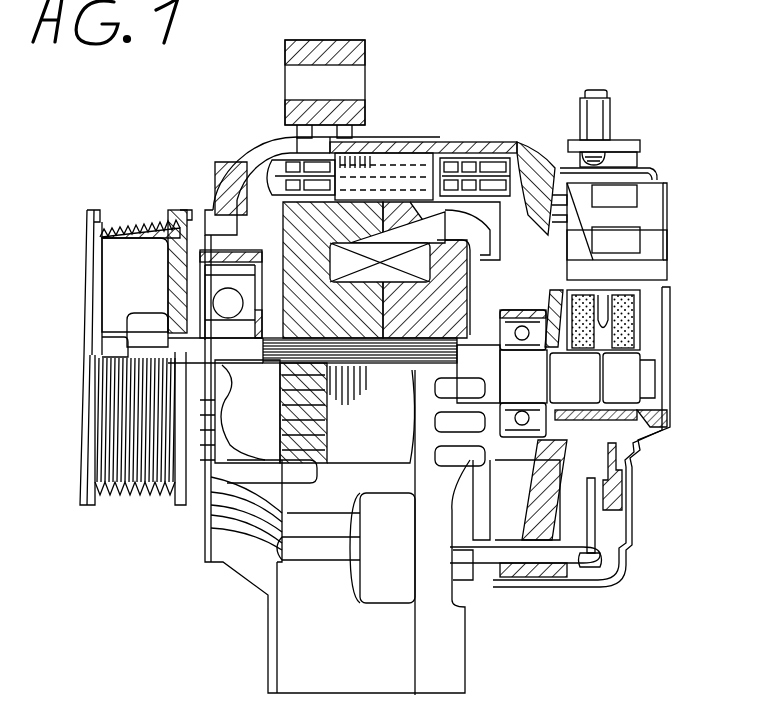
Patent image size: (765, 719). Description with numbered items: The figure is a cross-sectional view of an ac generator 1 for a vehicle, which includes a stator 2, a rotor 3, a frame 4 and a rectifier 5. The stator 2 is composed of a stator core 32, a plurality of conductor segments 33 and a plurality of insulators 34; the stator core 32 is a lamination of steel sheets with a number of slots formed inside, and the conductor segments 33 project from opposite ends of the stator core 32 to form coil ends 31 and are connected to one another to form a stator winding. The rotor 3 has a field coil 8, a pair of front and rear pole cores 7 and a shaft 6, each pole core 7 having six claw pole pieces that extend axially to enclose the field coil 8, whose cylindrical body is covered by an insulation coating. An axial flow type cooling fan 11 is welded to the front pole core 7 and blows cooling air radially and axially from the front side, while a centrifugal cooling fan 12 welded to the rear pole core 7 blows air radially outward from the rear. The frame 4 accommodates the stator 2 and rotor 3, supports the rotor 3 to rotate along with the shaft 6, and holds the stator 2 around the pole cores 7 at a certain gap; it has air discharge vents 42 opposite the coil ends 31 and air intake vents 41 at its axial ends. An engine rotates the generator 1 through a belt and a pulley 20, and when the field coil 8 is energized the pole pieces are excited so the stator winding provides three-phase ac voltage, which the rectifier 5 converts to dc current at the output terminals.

The ac generator 1 is at (516, 36).
The stator 2 is at (490, 205).
The rotor 3 is at (235, 200).
The frame 4 is at (382, 245).
The rectifier 5 is at (612, 480).
The shaft 6 is at (175, 302).
The pole core 7 is at (505, 215).
The field coil 8 is at (392, 182).
The cooling fan 11 is at (217, 216).
The centrifugal cooling fan 12 is at (608, 246).
The pulley 20 is at (118, 228).
The coil end 31 is at (285, 157).
The stator core 32 is at (372, 150).
The conductor segment 33 is at (485, 162).
The insulator 34 is at (462, 165).
The air intake vent 41 is at (202, 238).
The air discharge vent 42 is at (255, 150).